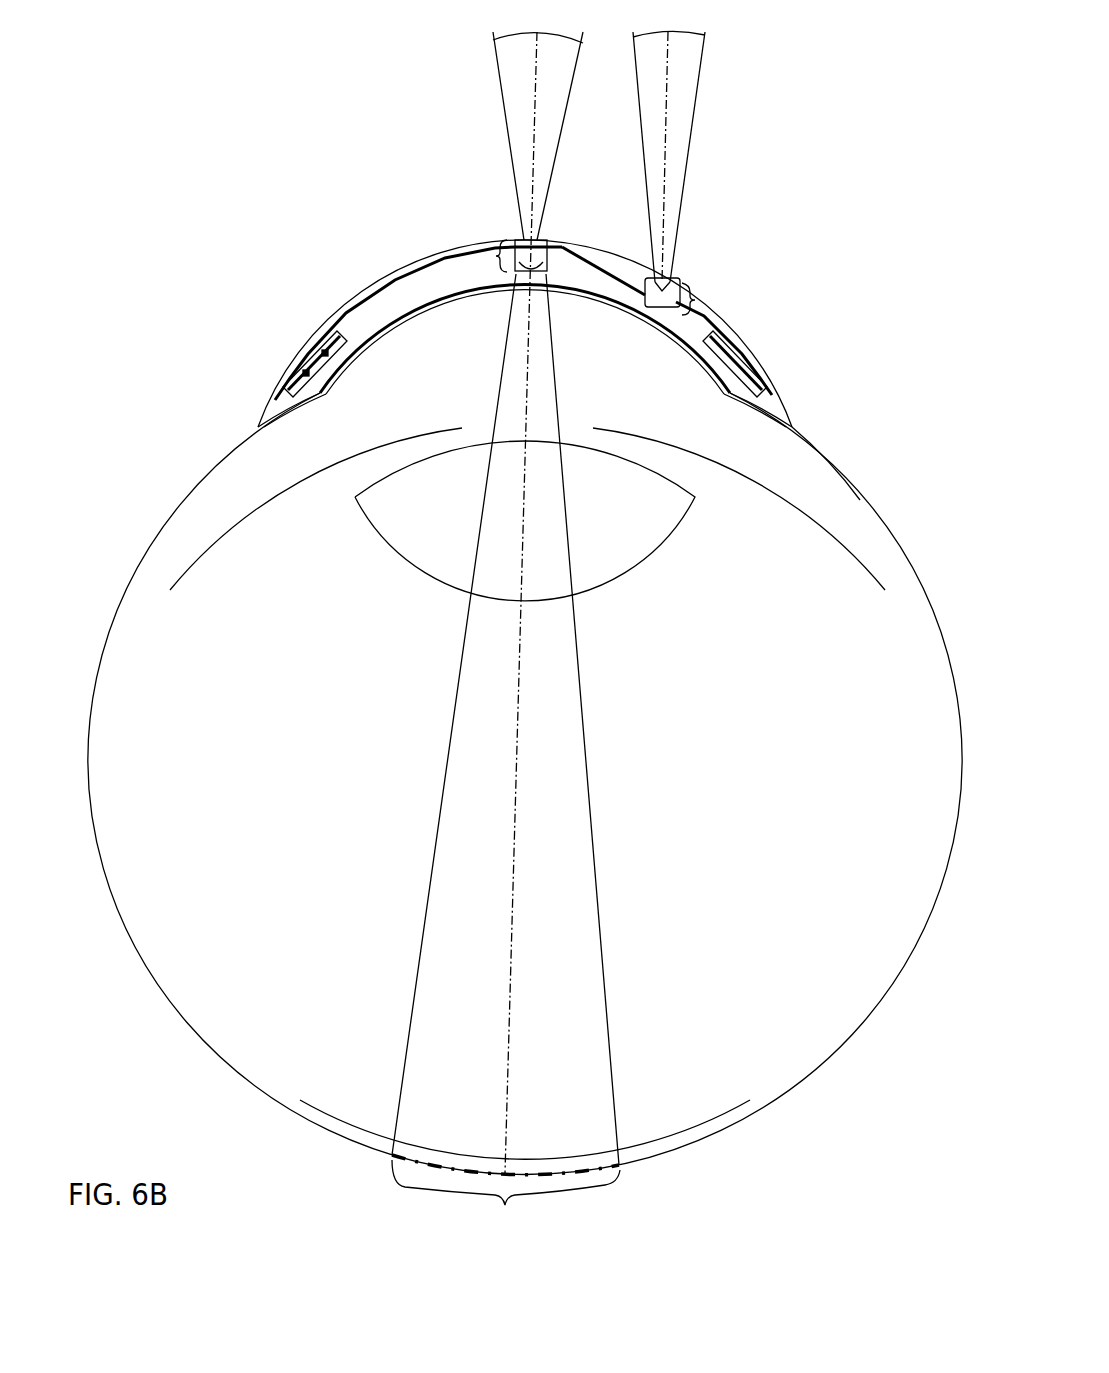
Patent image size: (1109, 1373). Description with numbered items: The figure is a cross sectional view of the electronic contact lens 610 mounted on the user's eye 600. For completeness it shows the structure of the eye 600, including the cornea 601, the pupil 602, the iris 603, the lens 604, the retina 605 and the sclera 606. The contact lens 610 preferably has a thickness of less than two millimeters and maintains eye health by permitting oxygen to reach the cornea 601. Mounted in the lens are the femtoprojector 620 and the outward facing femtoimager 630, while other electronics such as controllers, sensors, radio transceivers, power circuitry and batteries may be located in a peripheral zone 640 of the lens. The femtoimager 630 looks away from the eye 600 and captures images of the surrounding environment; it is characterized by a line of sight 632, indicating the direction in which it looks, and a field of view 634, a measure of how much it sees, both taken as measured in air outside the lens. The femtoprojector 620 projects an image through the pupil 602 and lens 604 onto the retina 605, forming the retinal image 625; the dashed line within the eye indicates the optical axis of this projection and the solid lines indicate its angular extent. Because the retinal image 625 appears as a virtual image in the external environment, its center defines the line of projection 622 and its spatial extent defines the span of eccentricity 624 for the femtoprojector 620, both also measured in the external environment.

The eye 600 is at (775, 671).
The cornea 601 is at (500, 356).
The pupil 602 is at (568, 427).
The iris 603 is at (448, 428).
The lens 604 is at (465, 515).
The retina 605 is at (700, 1138).
The sclera 606 is at (753, 413).
The electronic contact lens 610 is at (266, 397).
The femtoprojector 620 is at (497, 254).
The line of projection 622 is at (531, 163).
The span of eccentricity 624 is at (430, 598).
The retinal image 625 is at (506, 1195).
The femtoimager 630 is at (695, 300).
The line of sight 632 is at (663, 178).
The field of view 634 is at (753, 156).
The peripheral zone 640 is at (745, 372).